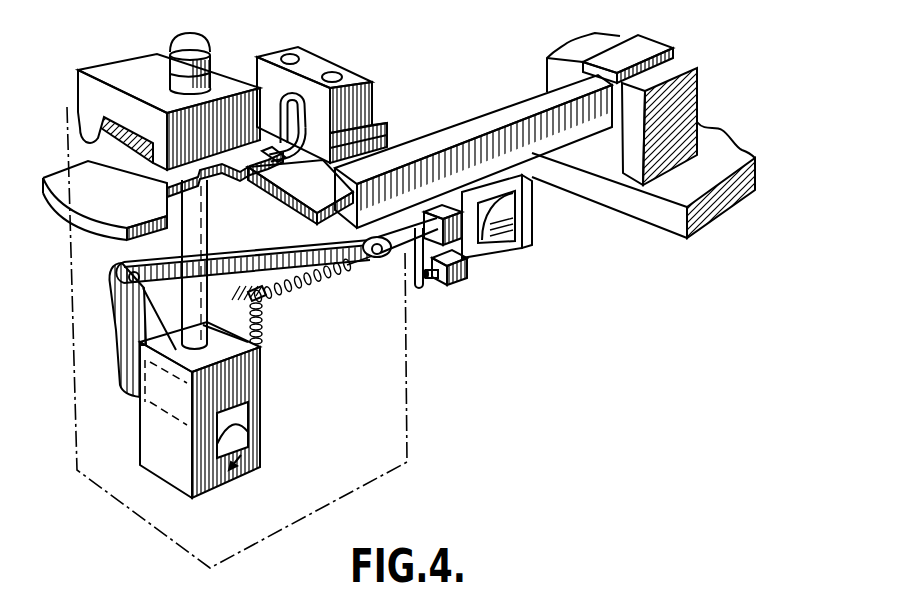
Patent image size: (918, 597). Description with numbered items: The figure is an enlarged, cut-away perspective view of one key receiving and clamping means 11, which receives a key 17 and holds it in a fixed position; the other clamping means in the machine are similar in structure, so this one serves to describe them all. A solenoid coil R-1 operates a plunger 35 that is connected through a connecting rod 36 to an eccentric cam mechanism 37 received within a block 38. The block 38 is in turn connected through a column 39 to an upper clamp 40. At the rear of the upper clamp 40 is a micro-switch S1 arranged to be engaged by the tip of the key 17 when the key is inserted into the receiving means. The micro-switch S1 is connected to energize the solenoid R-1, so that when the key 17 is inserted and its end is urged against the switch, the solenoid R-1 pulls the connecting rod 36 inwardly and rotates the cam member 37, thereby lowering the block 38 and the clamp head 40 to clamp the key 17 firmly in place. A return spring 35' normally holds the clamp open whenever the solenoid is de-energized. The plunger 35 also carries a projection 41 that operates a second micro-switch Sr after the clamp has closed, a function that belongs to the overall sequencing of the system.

The key receiving and clamping means 11 is at (116, 67).
The upper clamp 40 is at (225, 80).
The micro-switch S1 is at (323, 63).
The key 17 is at (82, 200).
The connecting rod 36 is at (258, 252).
The column 39 is at (200, 308).
The plunger 35 is at (400, 263).
The return spring 35' is at (311, 300).
The projection 41 is at (420, 288).
The micro-switch Sr is at (462, 285).
The solenoid coil R-1 is at (508, 230).
The block 38 is at (255, 389).
The eccentric cam mechanism 37 is at (250, 430).